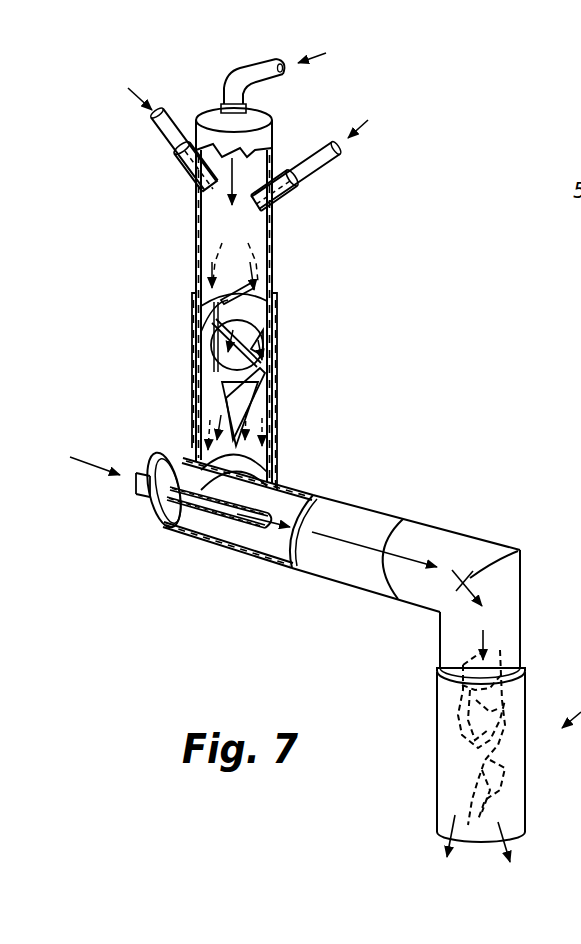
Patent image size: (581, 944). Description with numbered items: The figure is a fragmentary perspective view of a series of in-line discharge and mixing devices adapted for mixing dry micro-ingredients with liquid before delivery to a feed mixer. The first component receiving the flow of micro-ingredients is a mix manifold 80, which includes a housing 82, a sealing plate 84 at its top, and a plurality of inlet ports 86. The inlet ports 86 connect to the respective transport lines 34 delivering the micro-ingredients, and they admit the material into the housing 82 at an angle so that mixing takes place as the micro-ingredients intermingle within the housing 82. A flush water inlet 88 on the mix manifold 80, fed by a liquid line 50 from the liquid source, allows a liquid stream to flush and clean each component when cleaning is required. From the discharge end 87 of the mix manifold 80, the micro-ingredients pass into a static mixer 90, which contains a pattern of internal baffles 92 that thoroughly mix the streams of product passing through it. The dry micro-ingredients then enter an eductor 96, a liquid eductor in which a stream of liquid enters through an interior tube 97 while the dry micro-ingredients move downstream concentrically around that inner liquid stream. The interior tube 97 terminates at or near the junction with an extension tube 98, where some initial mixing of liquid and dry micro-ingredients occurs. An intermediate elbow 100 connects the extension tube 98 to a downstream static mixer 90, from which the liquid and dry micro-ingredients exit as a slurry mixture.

The transport lines 34 is at (162, 130).
The liquid lines 50 is at (267, 85).
The mix manifold 80 is at (262, 266).
The housing 82 is at (195, 222).
The sealing plate 84 is at (207, 113).
The inlet ports 86 is at (188, 176).
The discharge end 87 is at (232, 310).
The flush water inlet 88 is at (217, 100).
The static mixer 90 is at (263, 376).
The internal baffles 92 is at (200, 362).
The eductor 96 is at (226, 523).
The interior tube 97 is at (148, 476).
The extension tube 98 is at (376, 512).
The intermediate elbow 100 is at (486, 538).